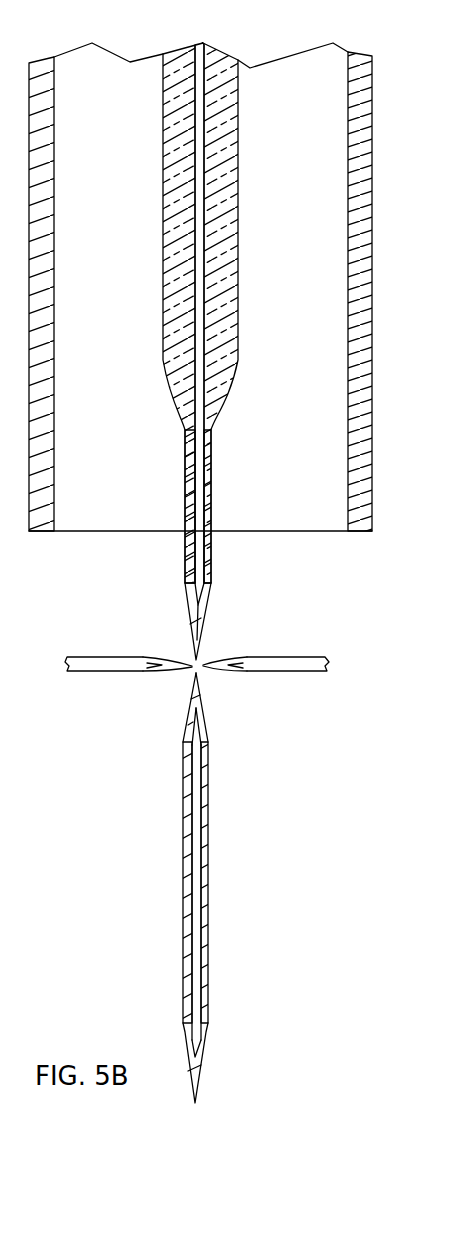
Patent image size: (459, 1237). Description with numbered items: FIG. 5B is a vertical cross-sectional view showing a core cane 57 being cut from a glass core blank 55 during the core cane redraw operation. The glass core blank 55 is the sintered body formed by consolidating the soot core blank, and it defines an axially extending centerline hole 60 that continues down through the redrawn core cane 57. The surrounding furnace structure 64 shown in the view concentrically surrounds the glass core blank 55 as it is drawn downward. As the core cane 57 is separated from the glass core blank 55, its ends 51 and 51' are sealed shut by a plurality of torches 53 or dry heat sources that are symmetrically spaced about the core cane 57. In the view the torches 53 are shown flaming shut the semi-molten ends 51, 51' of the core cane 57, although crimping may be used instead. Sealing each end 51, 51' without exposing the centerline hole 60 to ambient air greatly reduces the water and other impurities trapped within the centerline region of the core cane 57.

The end of core cane 51 is at (219, 709).
The end of core cane 51' is at (222, 1063).
The torches 53 is at (293, 656).
The glass core blank 55 is at (241, 204).
The core cane 57 is at (209, 822).
The centerline hole 60 is at (198, 114).
The housing wall 64 is at (373, 148).